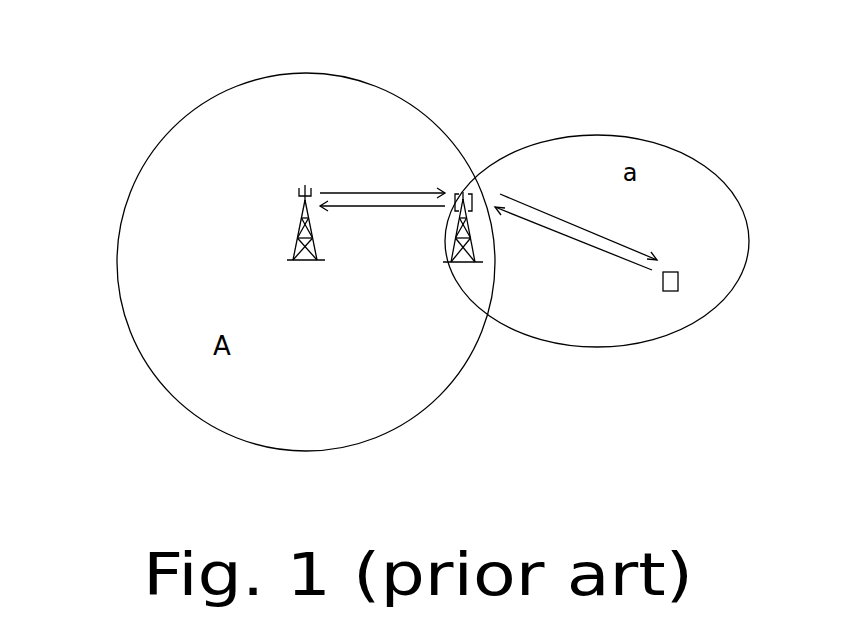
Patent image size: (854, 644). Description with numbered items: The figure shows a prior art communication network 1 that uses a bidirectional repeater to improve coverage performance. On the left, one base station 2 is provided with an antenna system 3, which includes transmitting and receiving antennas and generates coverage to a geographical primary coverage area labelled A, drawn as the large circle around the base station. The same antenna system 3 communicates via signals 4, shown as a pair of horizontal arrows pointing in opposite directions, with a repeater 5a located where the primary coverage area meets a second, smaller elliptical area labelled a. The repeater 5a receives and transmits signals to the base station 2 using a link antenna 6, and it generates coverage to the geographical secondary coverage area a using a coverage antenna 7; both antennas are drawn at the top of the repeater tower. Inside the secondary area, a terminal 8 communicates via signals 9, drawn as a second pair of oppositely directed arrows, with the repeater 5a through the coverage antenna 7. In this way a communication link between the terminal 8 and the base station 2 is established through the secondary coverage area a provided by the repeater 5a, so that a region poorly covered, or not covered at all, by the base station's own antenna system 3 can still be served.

The cellular communication system 1 is at (140, 44).
The base station 2 is at (306, 252).
The antenna system 3 is at (299, 175).
The signals 4 is at (388, 187).
The repeater 5a is at (470, 268).
The link antenna 6 is at (457, 192).
The coverage antenna 7 is at (471, 197).
The terminal 8 is at (680, 291).
The signals 9 is at (585, 248).